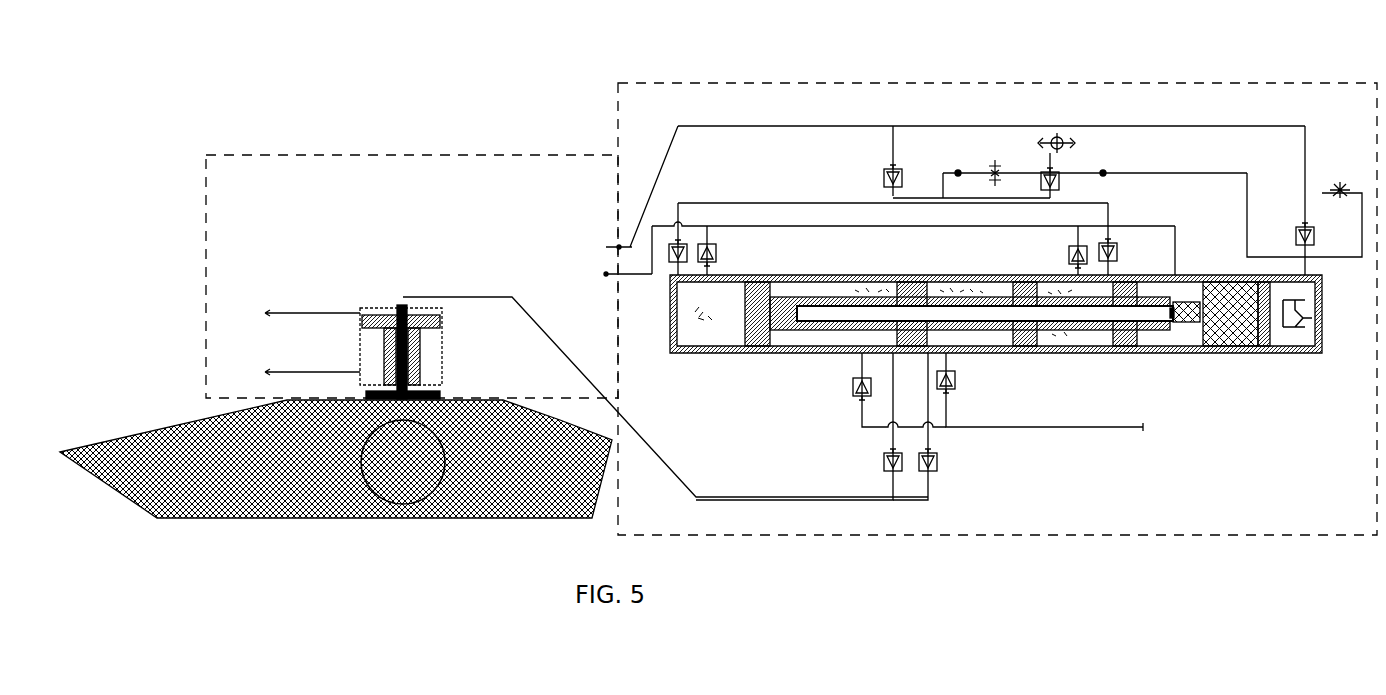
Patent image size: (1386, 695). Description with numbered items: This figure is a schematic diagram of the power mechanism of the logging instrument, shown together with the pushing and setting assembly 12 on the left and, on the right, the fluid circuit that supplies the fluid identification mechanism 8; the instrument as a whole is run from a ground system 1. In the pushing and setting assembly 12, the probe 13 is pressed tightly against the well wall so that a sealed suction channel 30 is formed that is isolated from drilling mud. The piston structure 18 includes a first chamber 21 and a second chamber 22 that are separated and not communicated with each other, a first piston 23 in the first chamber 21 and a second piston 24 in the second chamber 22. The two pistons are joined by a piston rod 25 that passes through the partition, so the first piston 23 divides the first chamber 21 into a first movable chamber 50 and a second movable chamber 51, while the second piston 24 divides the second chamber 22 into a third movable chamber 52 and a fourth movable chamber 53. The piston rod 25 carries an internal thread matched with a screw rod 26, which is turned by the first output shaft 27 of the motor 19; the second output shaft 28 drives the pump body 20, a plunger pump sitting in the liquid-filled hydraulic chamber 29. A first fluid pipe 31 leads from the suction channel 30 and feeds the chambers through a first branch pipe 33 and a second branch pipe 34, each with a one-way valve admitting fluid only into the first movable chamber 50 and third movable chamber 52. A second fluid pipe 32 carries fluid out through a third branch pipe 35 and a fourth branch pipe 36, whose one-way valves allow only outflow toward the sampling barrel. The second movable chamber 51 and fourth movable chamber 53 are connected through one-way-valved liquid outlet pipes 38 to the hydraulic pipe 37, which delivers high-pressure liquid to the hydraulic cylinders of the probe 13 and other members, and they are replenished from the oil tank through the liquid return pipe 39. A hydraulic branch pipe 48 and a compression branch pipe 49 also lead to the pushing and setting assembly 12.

The ground system 1 is at (1095, 176).
The fluid identification mechanism 8 is at (862, 82).
The pushing and setting assembly 12 is at (296, 153).
The probe 13 is at (400, 306).
The piston structure 18 is at (792, 353).
The motor 19 is at (1228, 353).
The pump body 20 is at (1318, 353).
The first chamber 21 is at (808, 275).
The second chamber 22 is at (992, 353).
The first piston 23 is at (745, 353).
The second piston 24 is at (1044, 353).
The piston rod 25 is at (870, 290).
The screw rod 26 is at (1098, 353).
The first output shaft 27 is at (1178, 353).
The second output shaft 28 is at (1268, 353).
The hydraulic chamber 29 is at (1258, 282).
The suction channel 30 is at (408, 306).
The first fluid pipe 31 is at (552, 330).
The second fluid pipe 32 is at (1043, 427).
The first branch pipe 33 is at (893, 488).
The second branch pipe 34 is at (930, 475).
The third branch pipe 35 is at (852, 420).
The fourth branch pipe 36 is at (948, 403).
The hydraulic pipe 37 is at (1303, 167).
The liquid outlet pipe 38 is at (815, 200).
The liquid return pipe 39 is at (963, 228).
The hydraulic branch pipe 48 is at (293, 305).
The compression branch pipe 49 is at (283, 372).
The first movable chamber 50 is at (787, 290).
The second movable chamber 51 is at (690, 352).
The third movable chamber 52 is at (998, 275).
The fourth movable chamber 53 is at (1058, 290).